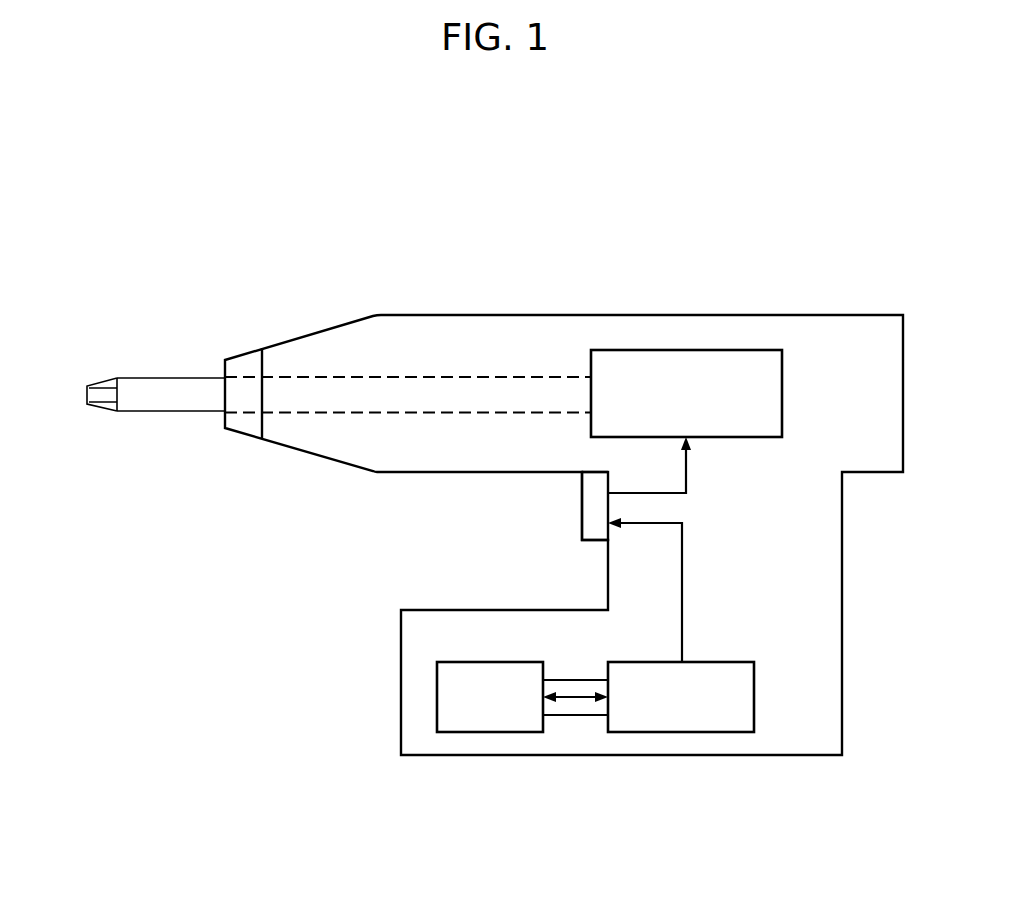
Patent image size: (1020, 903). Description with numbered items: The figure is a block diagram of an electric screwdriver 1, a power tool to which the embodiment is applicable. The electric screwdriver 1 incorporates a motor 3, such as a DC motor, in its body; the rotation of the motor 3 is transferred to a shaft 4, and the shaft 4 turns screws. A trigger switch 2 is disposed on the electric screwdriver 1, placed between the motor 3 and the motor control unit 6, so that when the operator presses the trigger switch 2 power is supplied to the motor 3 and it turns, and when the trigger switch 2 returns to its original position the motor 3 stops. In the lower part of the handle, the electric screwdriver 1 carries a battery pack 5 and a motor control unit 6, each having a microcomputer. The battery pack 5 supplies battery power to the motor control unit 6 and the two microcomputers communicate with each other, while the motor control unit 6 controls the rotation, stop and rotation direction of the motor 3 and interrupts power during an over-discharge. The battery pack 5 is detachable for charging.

The electric screwdriver 1 is at (592, 264).
The trigger switch 2 is at (582, 500).
The motor 3 is at (782, 375).
The shaft 4 is at (175, 413).
The battery pack 5 is at (490, 662).
The motor control unit 6 is at (754, 688).